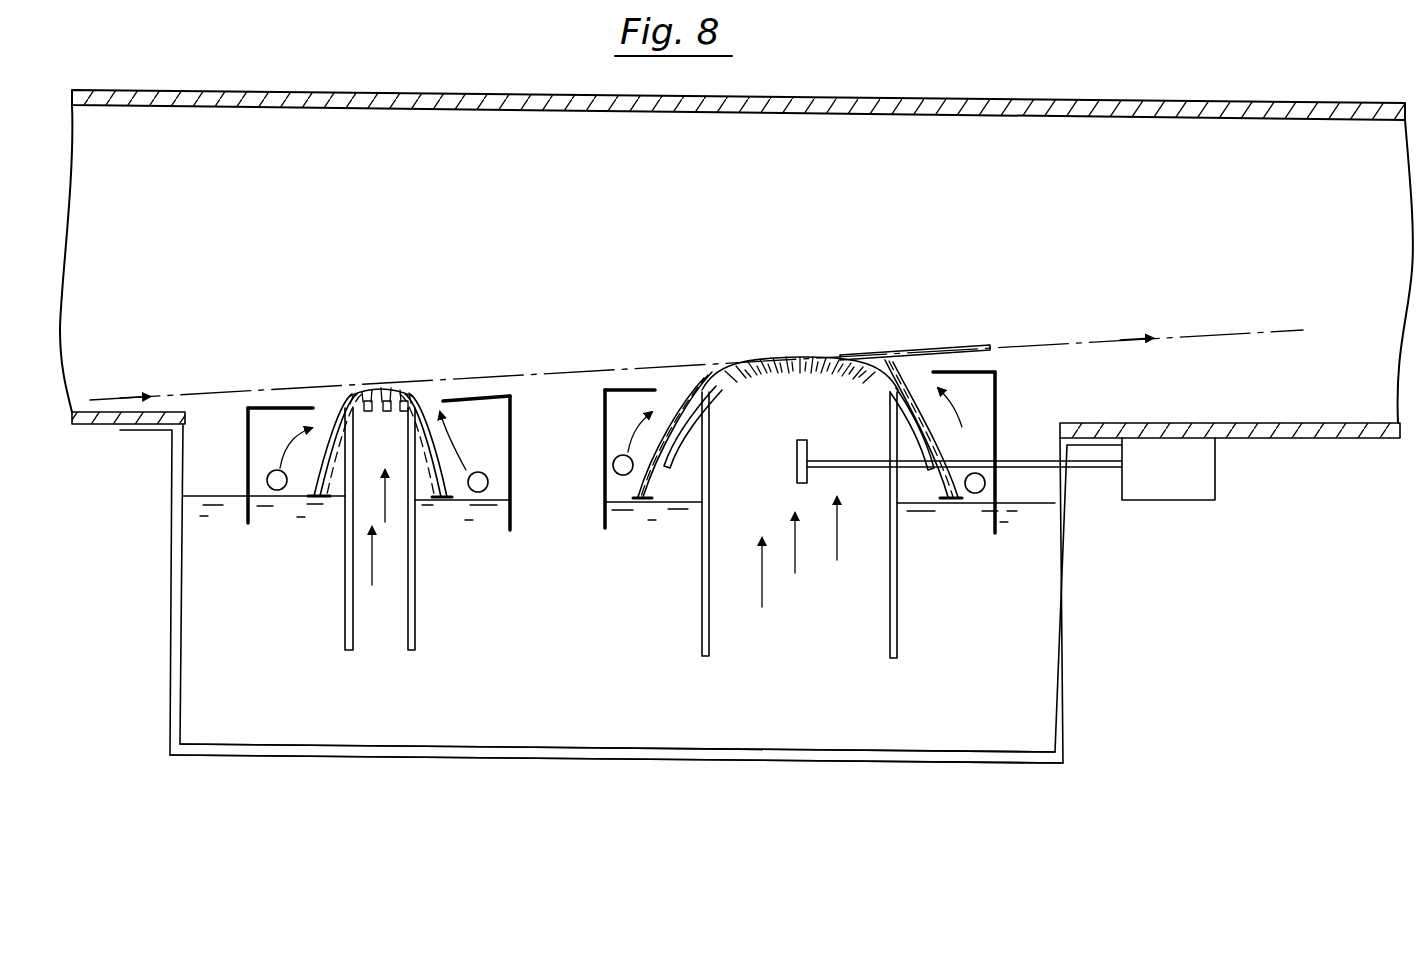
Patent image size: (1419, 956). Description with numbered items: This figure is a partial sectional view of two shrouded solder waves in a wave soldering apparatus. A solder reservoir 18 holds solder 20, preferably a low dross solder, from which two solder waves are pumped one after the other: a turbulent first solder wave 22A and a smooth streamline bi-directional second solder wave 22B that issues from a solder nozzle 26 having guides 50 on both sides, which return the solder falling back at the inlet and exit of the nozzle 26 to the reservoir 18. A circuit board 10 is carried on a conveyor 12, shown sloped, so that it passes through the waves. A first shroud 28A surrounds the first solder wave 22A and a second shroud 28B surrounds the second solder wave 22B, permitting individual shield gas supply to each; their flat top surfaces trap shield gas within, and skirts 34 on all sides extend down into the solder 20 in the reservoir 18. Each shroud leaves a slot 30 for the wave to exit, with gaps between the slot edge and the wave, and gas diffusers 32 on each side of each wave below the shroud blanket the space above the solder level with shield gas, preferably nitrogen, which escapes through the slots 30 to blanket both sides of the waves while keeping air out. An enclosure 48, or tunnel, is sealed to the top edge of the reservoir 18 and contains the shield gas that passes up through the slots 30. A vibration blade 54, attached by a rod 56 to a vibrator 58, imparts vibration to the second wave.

The circuit board 10 is at (923, 352).
The conveyor 12 is at (1237, 332).
The solder reservoir 18 is at (176, 596).
The solder 20 is at (620, 735).
The first solder wave 22A is at (382, 390).
The second solder wave 22B is at (767, 358).
The solder nozzle 26 is at (346, 586).
The first shroud 28A is at (495, 395).
The second shroud 28B is at (628, 385).
The slot 30 is at (325, 405).
The gas diffuser 32 is at (279, 491).
The skirt 34 is at (246, 515).
The enclosure 48 is at (865, 130).
The guide 50 is at (668, 443).
The vibration blade 54 is at (803, 440).
The rod 56 is at (873, 458).
The vibrator 58 is at (1198, 482).